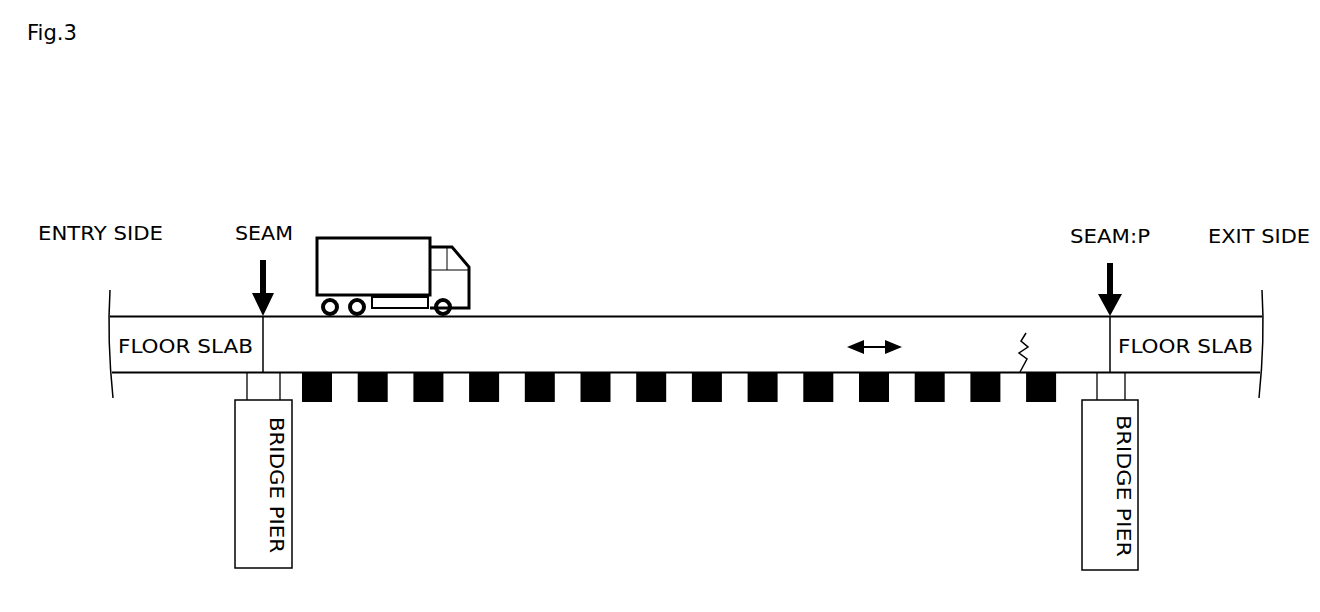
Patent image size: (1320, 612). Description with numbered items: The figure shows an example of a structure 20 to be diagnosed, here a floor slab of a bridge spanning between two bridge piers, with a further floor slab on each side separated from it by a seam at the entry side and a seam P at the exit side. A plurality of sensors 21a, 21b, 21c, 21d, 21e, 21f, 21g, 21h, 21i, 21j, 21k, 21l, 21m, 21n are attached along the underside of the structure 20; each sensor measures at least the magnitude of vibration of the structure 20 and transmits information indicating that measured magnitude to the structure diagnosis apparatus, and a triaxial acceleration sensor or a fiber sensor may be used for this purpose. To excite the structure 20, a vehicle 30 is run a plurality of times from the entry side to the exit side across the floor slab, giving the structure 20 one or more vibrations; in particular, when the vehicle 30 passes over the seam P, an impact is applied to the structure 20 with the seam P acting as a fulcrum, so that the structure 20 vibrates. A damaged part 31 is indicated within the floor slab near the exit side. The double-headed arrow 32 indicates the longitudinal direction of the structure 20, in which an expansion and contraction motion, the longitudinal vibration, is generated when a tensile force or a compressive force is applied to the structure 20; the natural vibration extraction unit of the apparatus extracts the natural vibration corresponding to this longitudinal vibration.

The structure 20 is at (690, 315).
The sensor 21a is at (319, 402).
The sensor 21b is at (375, 402).
The sensor 21c is at (430, 402).
The sensor 21d is at (486, 402).
The sensor 21e is at (542, 402).
The sensor 21f is at (598, 402).
The sensor 21g is at (653, 402).
The sensor 21h is at (709, 402).
The sensor 21i is at (765, 402).
The sensor 21j is at (820, 402).
The sensor 21k is at (876, 402).
The sensor 21l is at (932, 402).
The sensor 21m is at (987, 402).
The sensor 21n is at (1043, 402).
The vehicle 30 is at (375, 237).
The damaged part 31 is at (1020, 347).
The double-headed arrow 32 is at (876, 345).